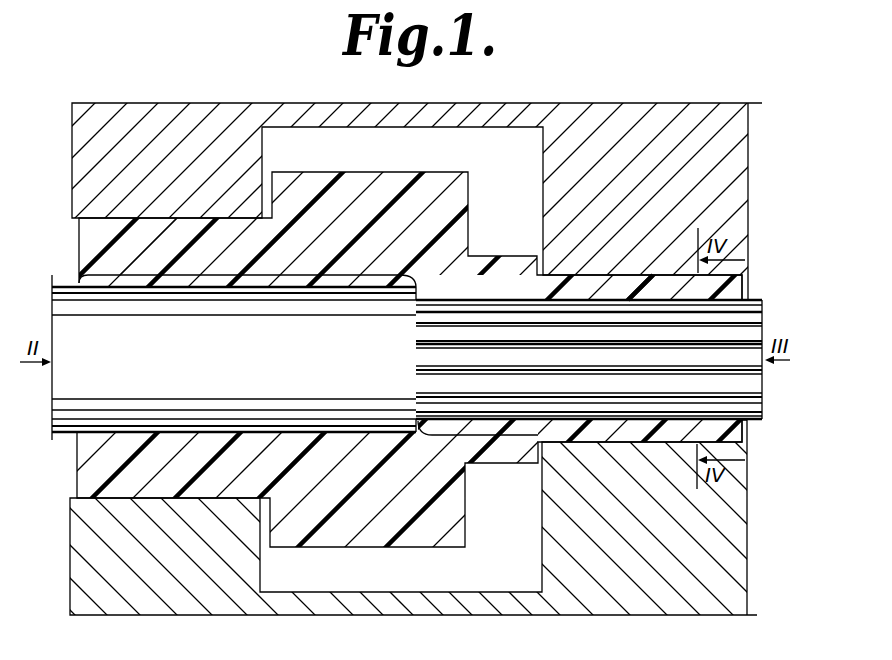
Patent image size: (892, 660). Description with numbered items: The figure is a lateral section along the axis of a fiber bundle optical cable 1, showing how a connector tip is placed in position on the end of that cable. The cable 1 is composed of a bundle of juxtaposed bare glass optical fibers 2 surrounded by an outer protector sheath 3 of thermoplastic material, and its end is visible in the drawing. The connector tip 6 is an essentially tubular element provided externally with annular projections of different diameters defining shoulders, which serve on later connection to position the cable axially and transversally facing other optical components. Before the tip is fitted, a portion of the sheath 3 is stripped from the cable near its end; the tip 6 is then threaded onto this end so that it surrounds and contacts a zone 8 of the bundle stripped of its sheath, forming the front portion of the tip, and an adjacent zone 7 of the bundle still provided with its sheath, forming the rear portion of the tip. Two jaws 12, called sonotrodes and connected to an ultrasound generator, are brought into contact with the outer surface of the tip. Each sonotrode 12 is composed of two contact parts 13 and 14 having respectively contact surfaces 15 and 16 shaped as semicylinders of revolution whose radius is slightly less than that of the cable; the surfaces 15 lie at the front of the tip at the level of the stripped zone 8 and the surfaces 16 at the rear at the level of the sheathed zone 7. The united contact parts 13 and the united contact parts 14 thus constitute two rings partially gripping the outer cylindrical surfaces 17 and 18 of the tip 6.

The fiber bundle optical cable 1 is at (393, 368).
The optical fibers 2 is at (743, 385).
The outer protector sheath 3 is at (72, 385).
The connector tip 6 is at (455, 188).
The zone of the bundle provided with its sheath 7 is at (268, 275).
The zone of the bundle stripped of the sheath 8 is at (580, 438).
The jaws (sonotrodes) 12 is at (446, 330).
The contact part 13 is at (658, 588).
The contact part 14 is at (273, 568).
The contact surface 15 is at (668, 280).
The contact surface 16 is at (148, 225).
The outer cylindrical surface of the tip 17 is at (588, 275).
The outer cylindrical surface of the tip 18 is at (192, 218).